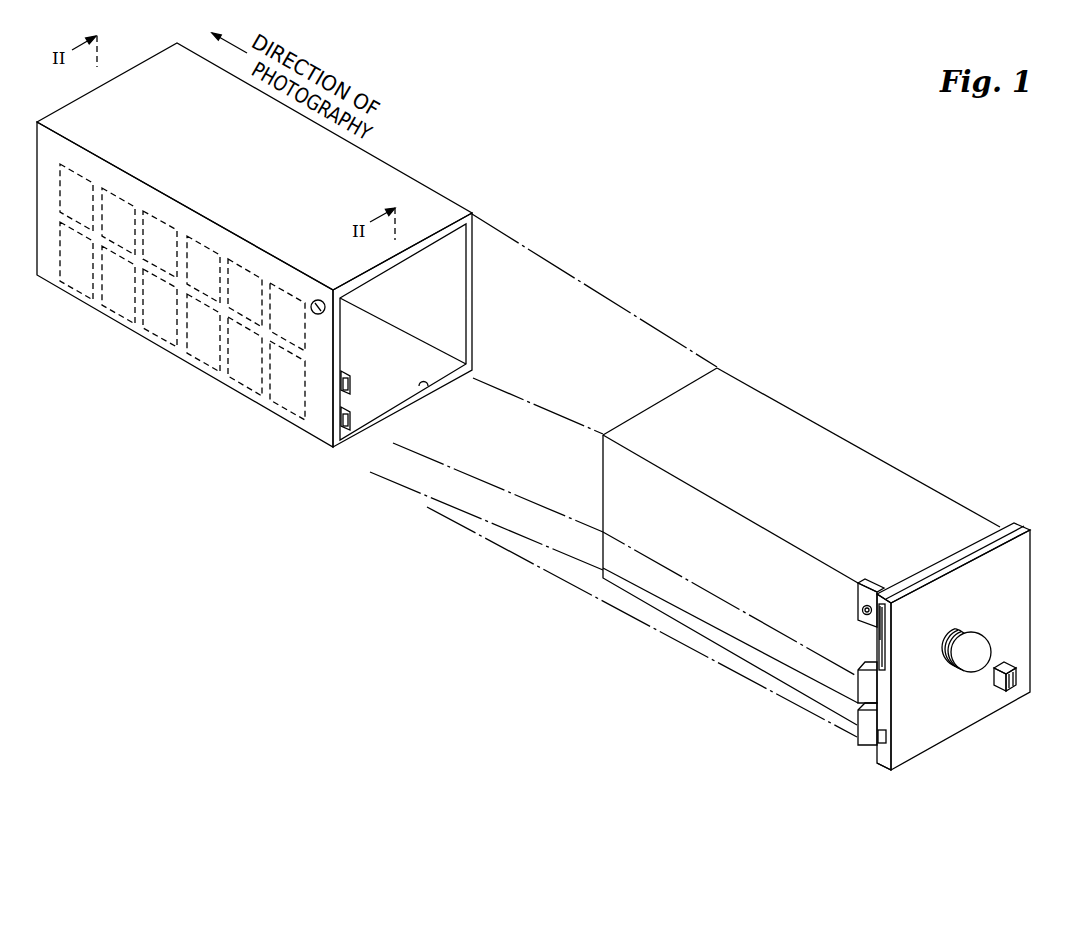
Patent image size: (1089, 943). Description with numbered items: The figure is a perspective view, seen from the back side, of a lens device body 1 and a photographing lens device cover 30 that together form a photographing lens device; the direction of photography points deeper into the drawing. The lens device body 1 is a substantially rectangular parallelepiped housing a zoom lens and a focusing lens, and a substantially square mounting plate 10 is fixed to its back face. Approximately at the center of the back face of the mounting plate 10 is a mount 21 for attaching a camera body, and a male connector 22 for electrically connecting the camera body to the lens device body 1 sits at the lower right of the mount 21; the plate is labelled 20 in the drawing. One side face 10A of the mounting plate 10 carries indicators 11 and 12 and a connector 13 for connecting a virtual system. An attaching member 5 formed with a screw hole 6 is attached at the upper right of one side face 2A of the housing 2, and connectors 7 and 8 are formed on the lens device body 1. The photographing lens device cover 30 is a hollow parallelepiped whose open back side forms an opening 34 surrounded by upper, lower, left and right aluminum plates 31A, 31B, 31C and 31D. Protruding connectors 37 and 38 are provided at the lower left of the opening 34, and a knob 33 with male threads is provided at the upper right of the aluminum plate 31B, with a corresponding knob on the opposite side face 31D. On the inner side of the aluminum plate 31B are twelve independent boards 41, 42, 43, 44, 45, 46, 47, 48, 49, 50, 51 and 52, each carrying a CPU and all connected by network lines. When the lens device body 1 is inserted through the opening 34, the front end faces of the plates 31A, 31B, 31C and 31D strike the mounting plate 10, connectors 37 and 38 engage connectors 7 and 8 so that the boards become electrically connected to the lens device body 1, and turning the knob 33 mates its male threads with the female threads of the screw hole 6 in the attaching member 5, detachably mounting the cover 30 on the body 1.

The lens device body 1 is at (852, 418).
The housing 2 is at (801, 546).
The one side face 2A is at (750, 552).
The attaching member 5 is at (858, 614).
The screw hole 6 is at (862, 606).
The connector 7 is at (863, 727).
The connector 8 is at (860, 690).
The mounting plate 10 is at (960, 625).
The one side face 10A is at (878, 748).
The indicator 11 is at (885, 617).
The indicator 12 is at (881, 648).
The connector 13 is at (883, 738).
The front panel 20 is at (1017, 565).
The mount 21 is at (978, 643).
The male connector 22 is at (1020, 676).
The photographing lens device cover 30 is at (292, 281).
The aluminum plate 31A is at (380, 146).
The aluminum plate 31B is at (215, 370).
The aluminum plate 31C is at (392, 420).
The side face 31D is at (471, 293).
The knob 33 is at (318, 300).
The opening 34 is at (426, 389).
The protruding connector 37 is at (350, 414).
The protruding connector 38 is at (350, 378).
The board 41 is at (283, 383).
The board 42 is at (245, 358).
The board 43 is at (203, 333).
The board 44 is at (163, 307).
The board 45 is at (113, 290).
The board 46 is at (73, 258).
The board 47 is at (73, 182).
The board 48 is at (118, 208).
The board 49 is at (165, 224).
The board 50 is at (203, 248).
The board 51 is at (245, 272).
The board 52 is at (292, 296).